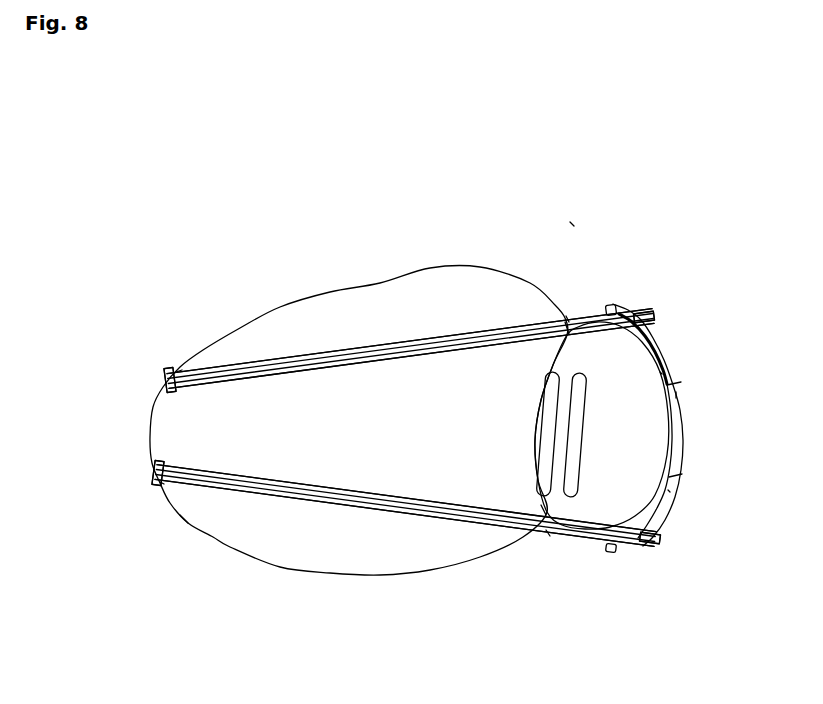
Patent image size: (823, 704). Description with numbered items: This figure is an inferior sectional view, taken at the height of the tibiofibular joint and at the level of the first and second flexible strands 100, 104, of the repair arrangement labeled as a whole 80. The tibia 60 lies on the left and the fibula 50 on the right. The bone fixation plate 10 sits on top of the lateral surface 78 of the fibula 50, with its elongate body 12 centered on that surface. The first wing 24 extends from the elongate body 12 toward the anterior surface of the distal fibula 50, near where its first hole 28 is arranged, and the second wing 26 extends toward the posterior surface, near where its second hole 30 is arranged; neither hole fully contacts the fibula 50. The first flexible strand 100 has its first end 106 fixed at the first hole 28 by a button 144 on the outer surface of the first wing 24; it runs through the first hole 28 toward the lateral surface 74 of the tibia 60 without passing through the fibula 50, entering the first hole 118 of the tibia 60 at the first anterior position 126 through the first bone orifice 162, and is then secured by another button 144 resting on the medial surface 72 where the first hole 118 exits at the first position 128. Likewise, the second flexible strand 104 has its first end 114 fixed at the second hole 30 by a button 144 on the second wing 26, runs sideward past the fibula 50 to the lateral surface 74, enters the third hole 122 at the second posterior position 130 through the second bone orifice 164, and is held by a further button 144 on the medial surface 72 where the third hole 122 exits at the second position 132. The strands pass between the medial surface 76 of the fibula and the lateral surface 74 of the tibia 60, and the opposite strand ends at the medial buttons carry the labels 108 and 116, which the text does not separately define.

The respirator assembly 80 is at (573, 218).
The tibia 60 is at (406, 312).
The first flexible strand 100 is at (330, 362).
The first hole 118 is at (469, 340).
The first anterior position 126 is at (571, 315).
The first hole 28 is at (615, 306).
The first end 106 is at (648, 314).
The button 144 is at (153, 396).
The first wing 24 is at (664, 357).
The fibula 50 is at (648, 399).
The bone fixation plate 10 is at (678, 427).
The elongate body 12 is at (678, 460).
The second wing 26 is at (662, 498).
The first end 114 is at (647, 540).
The second hole 30 is at (614, 550).
The lateral surface 74 is at (557, 515).
The second posterior position 130 is at (548, 538).
The second bone orifice 164 is at (541, 512).
The first bone orifice 162 is at (557, 345).
The medial surface 76 is at (591, 363).
The lateral surface 78 is at (646, 360).
The first position 128 is at (181, 366).
The upper strap left end 108 is at (161, 378).
The lower strap left end 116 is at (151, 483).
The second position 132 is at (160, 489).
The medial surface 72 is at (188, 524).
The second flexible strand 104 is at (327, 495).
The third hole 122 is at (425, 518).